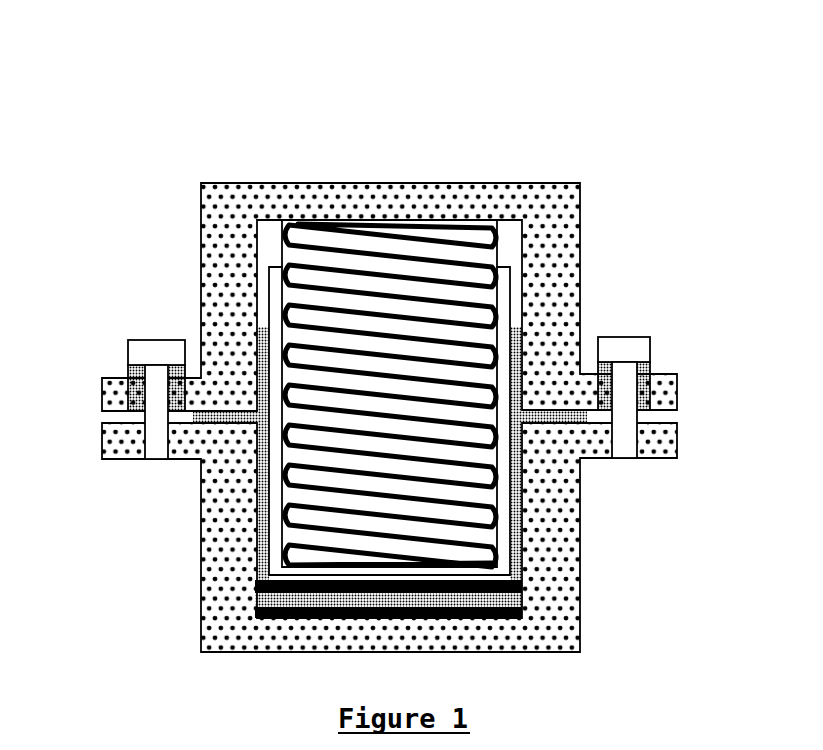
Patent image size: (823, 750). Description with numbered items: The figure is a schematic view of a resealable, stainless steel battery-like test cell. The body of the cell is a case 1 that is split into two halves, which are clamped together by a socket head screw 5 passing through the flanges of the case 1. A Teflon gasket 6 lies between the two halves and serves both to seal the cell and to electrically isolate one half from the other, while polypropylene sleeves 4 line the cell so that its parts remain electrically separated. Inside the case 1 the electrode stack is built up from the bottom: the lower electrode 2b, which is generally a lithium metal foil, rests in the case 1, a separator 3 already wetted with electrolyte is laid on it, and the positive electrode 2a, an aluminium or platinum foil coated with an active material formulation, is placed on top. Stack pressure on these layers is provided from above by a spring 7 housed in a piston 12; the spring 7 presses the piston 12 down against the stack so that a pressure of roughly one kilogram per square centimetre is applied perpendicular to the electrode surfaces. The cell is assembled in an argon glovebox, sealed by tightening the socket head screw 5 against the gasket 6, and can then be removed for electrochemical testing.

The case 1 is at (292, 178).
The spring 7 is at (486, 236).
The piston 12 is at (518, 275).
The socket head screw 5 is at (151, 326).
The polypropylene sleeve 4 is at (250, 508).
The Teflon gasket 6 is at (579, 428).
The positive electrode 2a is at (250, 589).
The lower electrode 2b is at (252, 618).
The separator 3 is at (533, 602).